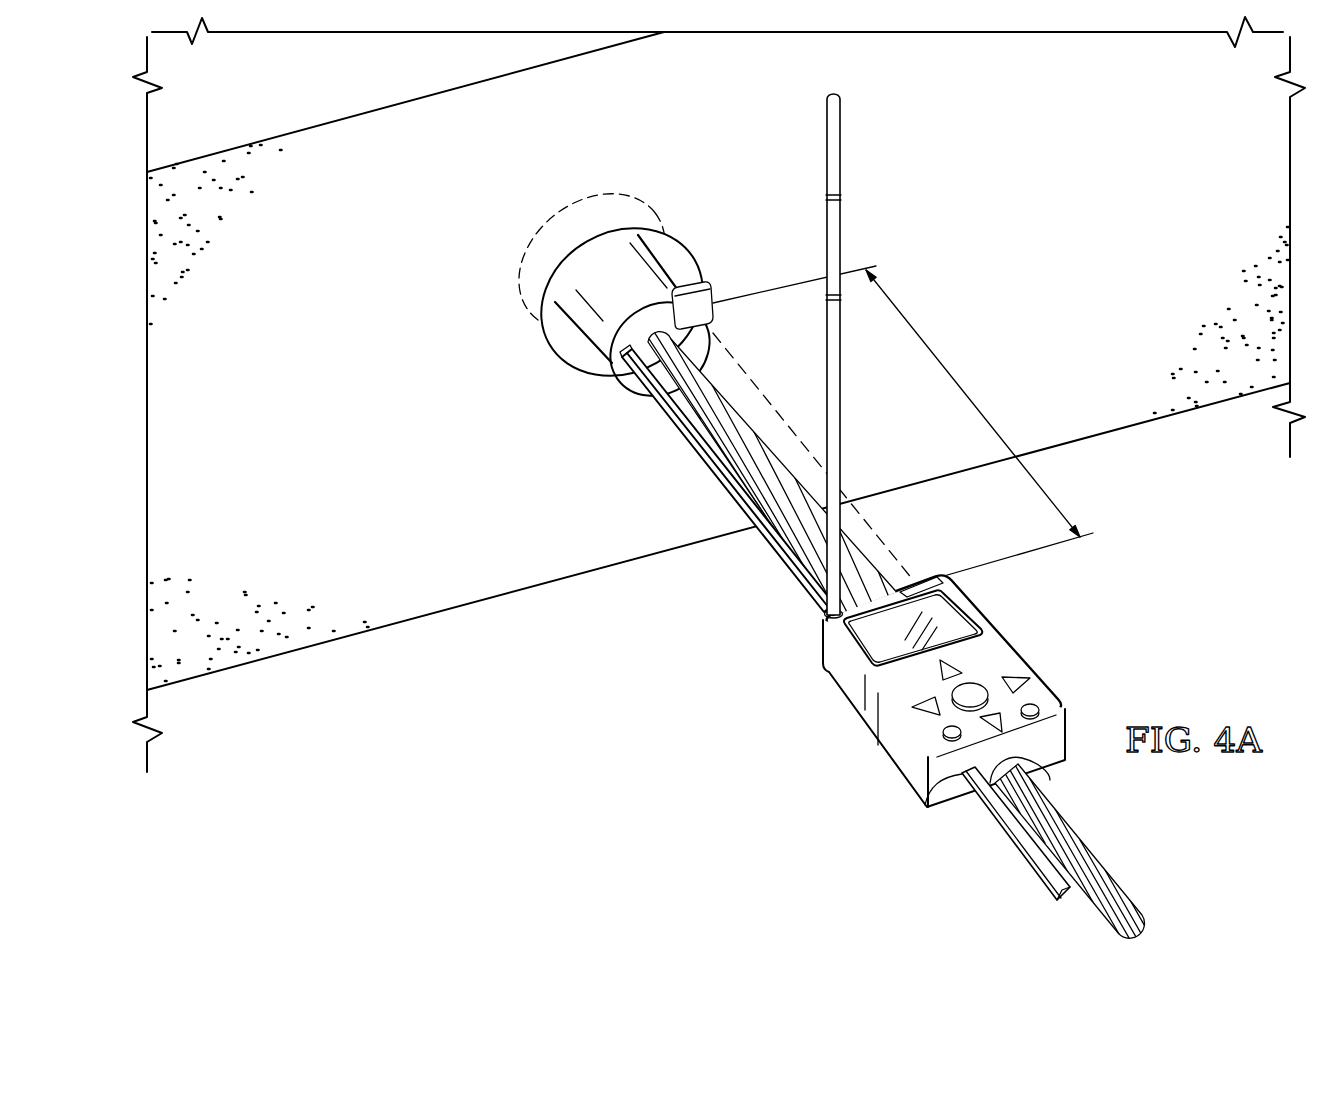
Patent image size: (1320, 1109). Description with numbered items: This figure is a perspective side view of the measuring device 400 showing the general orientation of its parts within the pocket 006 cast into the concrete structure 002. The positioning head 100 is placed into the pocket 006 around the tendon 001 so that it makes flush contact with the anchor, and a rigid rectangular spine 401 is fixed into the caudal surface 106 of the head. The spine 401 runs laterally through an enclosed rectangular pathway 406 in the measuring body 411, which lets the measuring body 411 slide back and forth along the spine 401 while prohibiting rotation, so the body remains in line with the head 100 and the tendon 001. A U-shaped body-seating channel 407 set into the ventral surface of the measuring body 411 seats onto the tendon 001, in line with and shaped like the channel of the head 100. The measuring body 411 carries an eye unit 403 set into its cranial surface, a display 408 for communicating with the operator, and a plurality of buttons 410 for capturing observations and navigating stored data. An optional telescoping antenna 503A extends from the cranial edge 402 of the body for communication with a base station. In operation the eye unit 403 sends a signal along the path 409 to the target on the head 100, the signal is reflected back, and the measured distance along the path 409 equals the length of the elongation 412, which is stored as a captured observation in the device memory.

The concrete structure 002 is at (350, 491).
The measuring device 400 is at (456, 715).
The pocket 006 is at (533, 300).
The positioning head 100 is at (672, 260).
The caudal surface 106 is at (778, 292).
The signal path 409 is at (750, 380).
The elongation 412 is at (973, 401).
The cranial edge 402 is at (1007, 558).
The measuring body 411 is at (845, 743).
The eye unit 403 is at (923, 572).
The display 408 is at (877, 638).
The buttons 410 is at (972, 694).
The rectangular pathway 406 is at (930, 808).
The body-seating channel 407 is at (1053, 783).
The spine 401 is at (697, 458).
The tendon 001 is at (1137, 868).
The telescoping antenna 503A is at (845, 133).